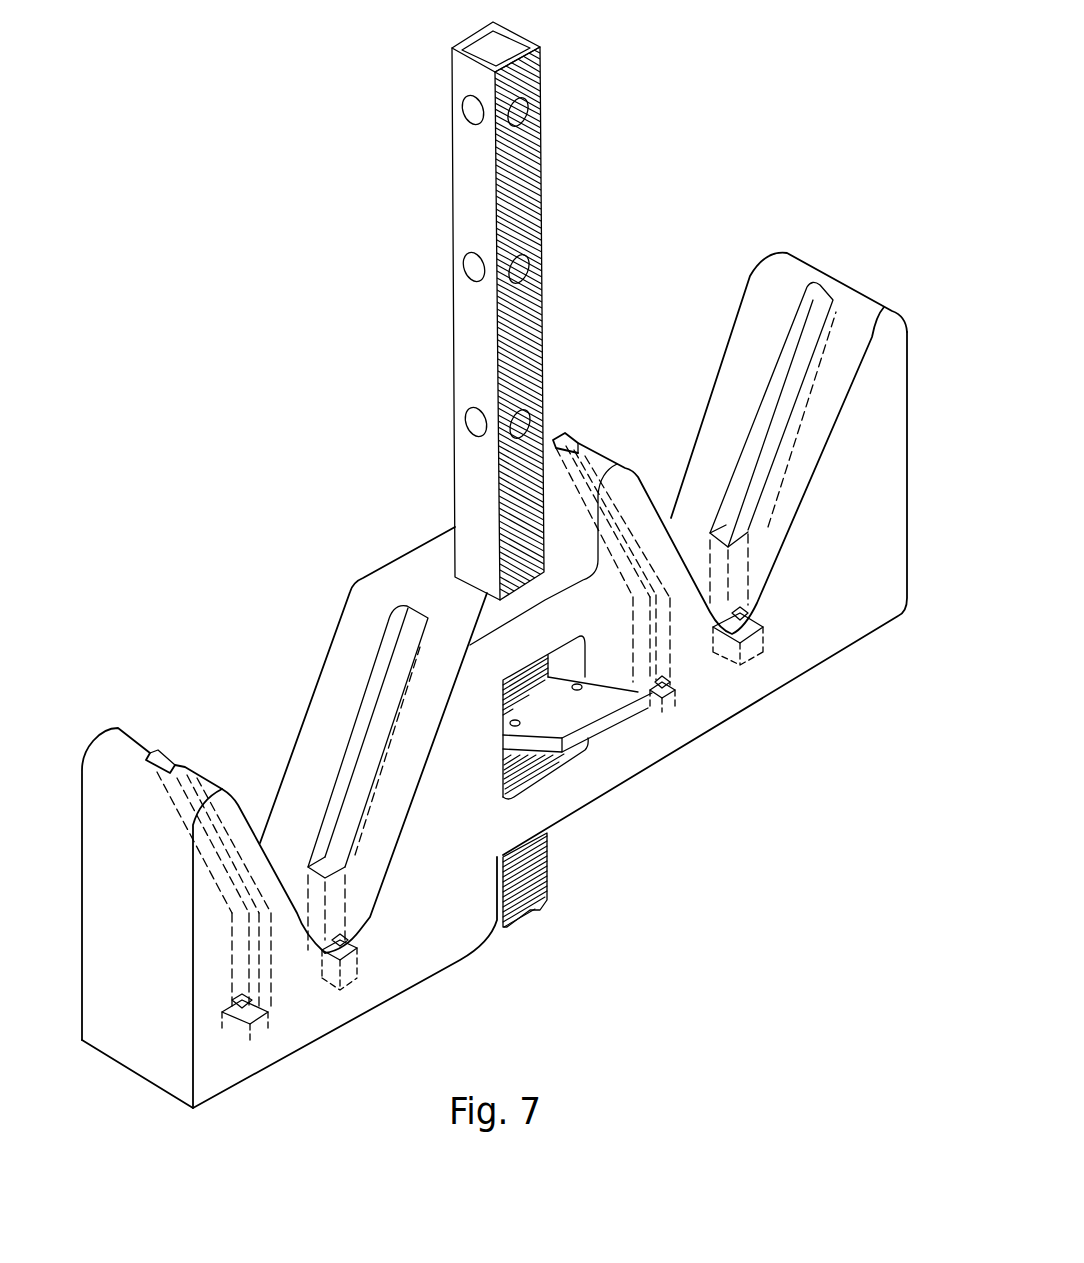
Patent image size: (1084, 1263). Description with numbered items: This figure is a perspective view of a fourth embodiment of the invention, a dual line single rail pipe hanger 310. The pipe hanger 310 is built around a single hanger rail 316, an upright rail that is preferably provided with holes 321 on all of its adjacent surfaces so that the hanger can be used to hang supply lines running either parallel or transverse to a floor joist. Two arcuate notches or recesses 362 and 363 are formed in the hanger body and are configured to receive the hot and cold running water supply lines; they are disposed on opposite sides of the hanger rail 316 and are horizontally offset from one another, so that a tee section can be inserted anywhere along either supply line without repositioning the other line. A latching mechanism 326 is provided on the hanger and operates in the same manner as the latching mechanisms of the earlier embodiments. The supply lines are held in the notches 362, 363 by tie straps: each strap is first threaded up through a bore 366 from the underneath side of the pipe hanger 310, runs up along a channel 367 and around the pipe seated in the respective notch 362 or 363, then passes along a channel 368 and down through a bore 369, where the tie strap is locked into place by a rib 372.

The dual line single rail pipe hanger 310 is at (395, 440).
The hanger rail 316 is at (462, 78).
The holes 321 is at (462, 109).
The latching mechanism 326 is at (580, 774).
The arcuate notch 362 is at (258, 775).
The arcuate notch 363 is at (668, 440).
The bore 366 is at (357, 958).
The channel 367 is at (400, 645).
The channel 368 is at (165, 757).
The bore 369 is at (226, 1012).
The rib 372 is at (242, 1005).